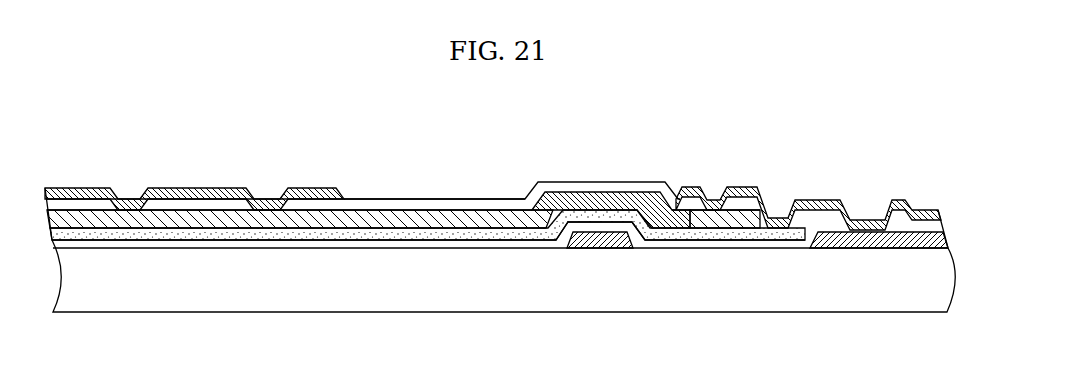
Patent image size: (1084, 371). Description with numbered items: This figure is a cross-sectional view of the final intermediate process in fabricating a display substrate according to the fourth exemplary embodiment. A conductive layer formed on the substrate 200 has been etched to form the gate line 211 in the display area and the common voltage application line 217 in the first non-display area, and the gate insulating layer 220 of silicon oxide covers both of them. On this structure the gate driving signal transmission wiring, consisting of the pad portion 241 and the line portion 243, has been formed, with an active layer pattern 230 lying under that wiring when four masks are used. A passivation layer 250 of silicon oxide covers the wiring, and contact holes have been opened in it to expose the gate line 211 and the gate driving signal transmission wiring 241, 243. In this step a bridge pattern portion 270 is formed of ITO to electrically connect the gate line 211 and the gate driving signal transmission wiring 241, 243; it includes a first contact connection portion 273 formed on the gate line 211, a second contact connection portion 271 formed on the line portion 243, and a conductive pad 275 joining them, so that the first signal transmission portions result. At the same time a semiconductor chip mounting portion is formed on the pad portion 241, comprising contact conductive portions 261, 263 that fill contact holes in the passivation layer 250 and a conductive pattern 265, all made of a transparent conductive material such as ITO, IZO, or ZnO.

The substrate 200 is at (722, 297).
The gate line 211 is at (840, 248).
The common voltage application line 217 is at (595, 250).
The gate insulating layer 220 is at (405, 222).
The active layer pattern 230 is at (317, 236).
The pad portion 241 is at (153, 224).
The line portion 243 is at (499, 234).
The passivation layer 250 is at (583, 190).
The contact conductive portion 261 is at (122, 197).
The contact conductive portion 263 is at (258, 198).
The conductive pattern 265 is at (197, 188).
The bridge pattern portion 270 is at (872, 131).
The second contact connection portion 271 is at (707, 187).
The first contact connection portion 273 is at (862, 219).
The conductive pad 275 is at (806, 199).